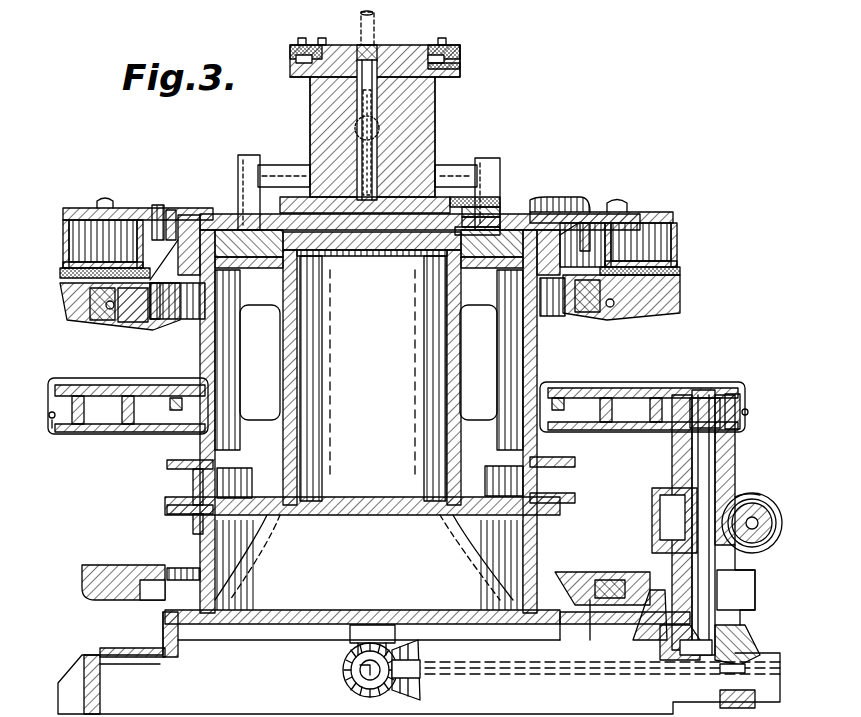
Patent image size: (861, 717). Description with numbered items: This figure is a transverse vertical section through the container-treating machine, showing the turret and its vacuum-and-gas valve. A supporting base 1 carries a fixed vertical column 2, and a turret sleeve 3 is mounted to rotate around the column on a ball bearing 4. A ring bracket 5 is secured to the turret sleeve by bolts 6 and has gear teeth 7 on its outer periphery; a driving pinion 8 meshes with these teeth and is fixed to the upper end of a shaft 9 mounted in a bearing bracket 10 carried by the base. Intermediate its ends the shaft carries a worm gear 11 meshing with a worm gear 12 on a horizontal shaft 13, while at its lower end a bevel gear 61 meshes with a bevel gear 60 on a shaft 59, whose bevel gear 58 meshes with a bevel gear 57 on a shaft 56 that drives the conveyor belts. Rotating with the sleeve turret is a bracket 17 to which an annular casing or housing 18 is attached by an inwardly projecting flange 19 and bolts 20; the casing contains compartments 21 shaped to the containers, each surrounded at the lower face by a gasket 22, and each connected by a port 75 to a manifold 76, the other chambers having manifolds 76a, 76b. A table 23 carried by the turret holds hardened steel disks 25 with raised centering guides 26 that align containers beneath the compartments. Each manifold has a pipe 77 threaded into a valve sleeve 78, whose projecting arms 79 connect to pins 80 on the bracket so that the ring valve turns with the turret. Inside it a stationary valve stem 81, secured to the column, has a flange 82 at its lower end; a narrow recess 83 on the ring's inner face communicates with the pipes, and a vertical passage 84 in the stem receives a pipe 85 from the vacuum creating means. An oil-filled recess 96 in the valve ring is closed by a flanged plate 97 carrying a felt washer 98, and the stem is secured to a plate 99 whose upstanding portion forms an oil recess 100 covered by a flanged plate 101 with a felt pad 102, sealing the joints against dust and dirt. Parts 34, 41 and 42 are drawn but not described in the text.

The supporting base 1 is at (115, 652).
The column 2 is at (290, 345).
The turret sleeve 3 is at (537, 356).
The ball bearing 4 is at (275, 512).
The ring bracket 5 is at (105, 405).
The bolts 6 is at (176, 398).
The gear teeth 7 is at (54, 432).
The driving pinion 8 is at (735, 394).
The shaft 9 is at (712, 452).
The bearing bracket 10 is at (757, 588).
The worm gear 11 is at (656, 532).
The worm gear 12 is at (760, 495).
The horizontal shaft 13 is at (785, 490).
The bracket 17 is at (196, 214).
The casing or housing 18 is at (72, 210).
The inwardly projecting flange 19 is at (172, 212).
The bolts 20 is at (158, 208).
The compartments 21 is at (90, 240).
The gasket 22 is at (66, 270).
The table 23 is at (62, 322).
The hardened steel disks 25 is at (128, 300).
The centering guide 26 is at (160, 300).
The lug 34 is at (115, 566).
The flange 41 is at (185, 500).
The lower flange 42 is at (188, 522).
The shaft 56 is at (362, 668).
The bevel gear 57 is at (350, 678).
The bevel gear 58 is at (412, 684).
The shaft 59 is at (596, 668).
The bevel gear 60 is at (755, 706).
The bevel gear 61 is at (677, 650).
The port 75 is at (98, 300).
The manifold 76 is at (585, 197).
The manifold 76a is at (105, 196).
The manifold 76b is at (635, 200).
The pipe 77 is at (362, 142).
The valve sleeve 78 is at (322, 98).
The projecting arms 79 is at (300, 176).
The pin 80 is at (252, 148).
The valve stem 81 is at (372, 108).
The flange 82 is at (435, 236).
The vertically extending recess 83 is at (437, 114).
The passage 84 is at (356, 64).
The pipe 85 is at (376, 30).
The countersink or recess 96 is at (458, 66).
The flanged plate 97 is at (458, 52).
The felt washer 98 is at (445, 32).
The plate 99 is at (485, 232).
The recess 100 is at (492, 222).
The flanged plate 101 is at (492, 210).
The felt pad 102 is at (488, 198).